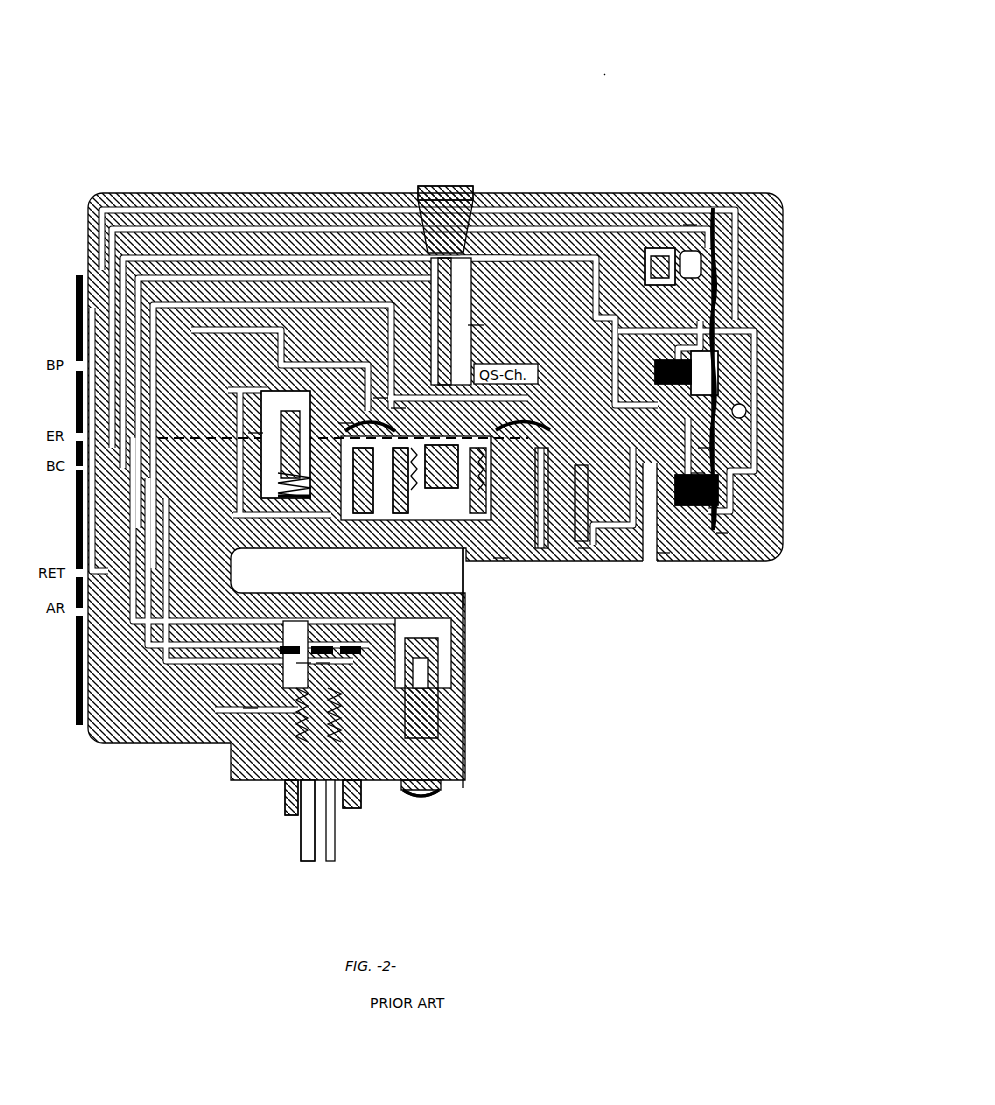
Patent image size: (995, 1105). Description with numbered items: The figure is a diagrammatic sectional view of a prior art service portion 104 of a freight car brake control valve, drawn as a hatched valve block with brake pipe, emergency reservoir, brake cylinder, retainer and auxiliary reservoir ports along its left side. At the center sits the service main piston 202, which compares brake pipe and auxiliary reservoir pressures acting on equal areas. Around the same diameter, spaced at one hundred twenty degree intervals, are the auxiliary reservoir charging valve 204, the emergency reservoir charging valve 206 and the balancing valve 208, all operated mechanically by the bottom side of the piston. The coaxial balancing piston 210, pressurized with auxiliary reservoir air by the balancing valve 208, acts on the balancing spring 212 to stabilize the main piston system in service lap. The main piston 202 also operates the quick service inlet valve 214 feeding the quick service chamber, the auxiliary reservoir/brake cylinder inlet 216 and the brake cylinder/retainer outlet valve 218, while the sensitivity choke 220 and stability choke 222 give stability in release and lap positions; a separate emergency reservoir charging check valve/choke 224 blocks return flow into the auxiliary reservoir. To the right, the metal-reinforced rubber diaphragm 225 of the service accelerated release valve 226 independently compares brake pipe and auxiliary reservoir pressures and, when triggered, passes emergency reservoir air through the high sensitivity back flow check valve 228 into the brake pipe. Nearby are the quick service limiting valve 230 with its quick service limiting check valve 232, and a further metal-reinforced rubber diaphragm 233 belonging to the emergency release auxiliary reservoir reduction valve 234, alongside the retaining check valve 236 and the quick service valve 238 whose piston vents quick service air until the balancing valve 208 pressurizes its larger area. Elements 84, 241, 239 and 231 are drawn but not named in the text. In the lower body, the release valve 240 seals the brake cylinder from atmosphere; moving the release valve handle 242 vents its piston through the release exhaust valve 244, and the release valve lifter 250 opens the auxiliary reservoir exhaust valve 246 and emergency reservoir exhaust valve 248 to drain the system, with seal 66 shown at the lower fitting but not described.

The service portion 104 is at (632, 48).
The sensitivity choke 220 is at (174, 297).
The stability choke 222 is at (259, 289).
The quick service inlet valve 214 is at (323, 280).
The brake cylinder/retainer outlet valve 218 is at (362, 274).
The auxiliary reservoir/brake cylinder inlet 216 is at (492, 222).
The quick service limiting check valve 232 is at (609, 269).
The quick service limiting valve 230 is at (639, 268).
The service main piston 202 is at (527, 249).
The high sensitivity back flow check valve 228 is at (674, 224).
The service accelerated release valve 226 is at (732, 178).
The metal-reinforced rubber diaphragm 225 is at (747, 345).
The emergency reservoir charging check valve/choke 224 is at (275, 482).
The emergency reservoir charging valve 206 is at (340, 506).
The auxiliary reservoir charging valve 204 is at (373, 514).
The balancing spring 212 is at (417, 506).
The balancing piston 210 is at (481, 578).
The seal 84 is at (541, 524).
The quick service valve 238 is at (604, 533).
The balancing valve 208 is at (522, 570).
The passage 241 is at (611, 565).
The emergency release auxiliary reservoir reduction valve 234 is at (630, 588).
The passage 239 is at (653, 557).
The retaining check valve 236 is at (665, 553).
The plug 231 is at (675, 556).
The metal-reinforced rubber diaphragm 233 is at (750, 567).
The release valve 240 is at (208, 734).
The emergency reservoir exhaust valve 248 is at (239, 725).
The release exhaust valve 244 is at (259, 737).
The release valve lifter 250 is at (273, 774).
The auxiliary reservoir exhaust valve 246 is at (372, 815).
The seal 66 is at (423, 814).
The release valve handle 242 is at (339, 841).